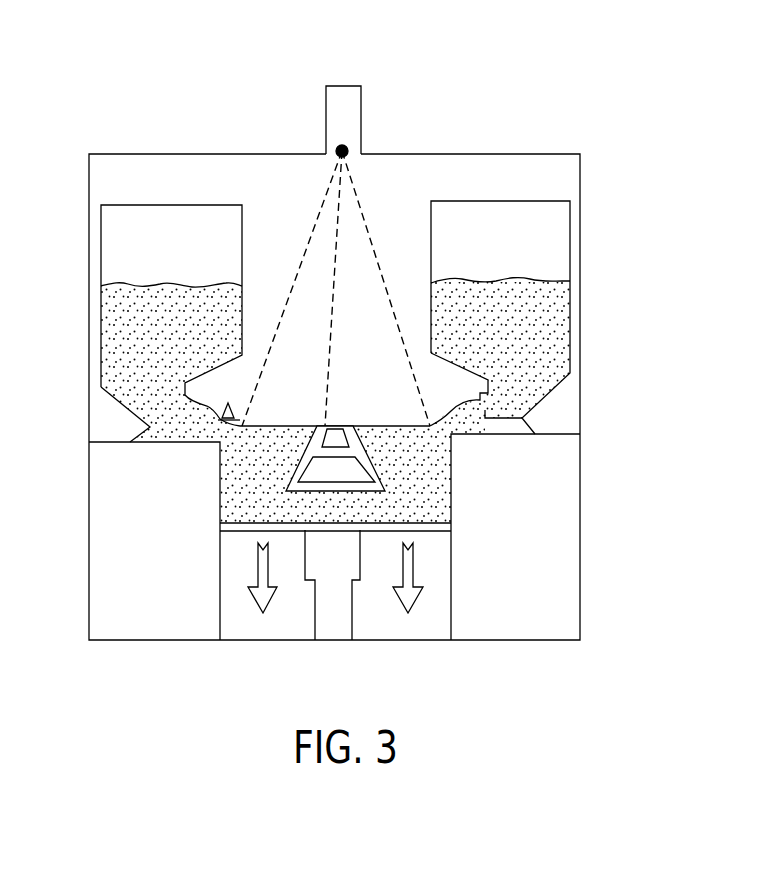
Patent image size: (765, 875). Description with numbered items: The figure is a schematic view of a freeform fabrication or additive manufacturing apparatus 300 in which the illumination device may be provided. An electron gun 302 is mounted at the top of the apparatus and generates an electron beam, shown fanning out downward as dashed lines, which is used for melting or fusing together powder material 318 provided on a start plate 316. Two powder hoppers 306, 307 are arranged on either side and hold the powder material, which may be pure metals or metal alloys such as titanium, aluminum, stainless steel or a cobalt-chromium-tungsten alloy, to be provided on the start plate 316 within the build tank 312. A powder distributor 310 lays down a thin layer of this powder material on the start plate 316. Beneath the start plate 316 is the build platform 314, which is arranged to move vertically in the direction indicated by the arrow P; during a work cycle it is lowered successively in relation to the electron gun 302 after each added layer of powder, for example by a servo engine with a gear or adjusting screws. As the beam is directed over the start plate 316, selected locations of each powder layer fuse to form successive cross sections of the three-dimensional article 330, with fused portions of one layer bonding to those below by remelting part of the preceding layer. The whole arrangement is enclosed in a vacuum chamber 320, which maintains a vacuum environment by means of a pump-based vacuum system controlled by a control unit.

The additive manufacturing apparatus 300 is at (516, 91).
The electron gun 302 is at (346, 148).
The powder hopper 306 is at (110, 330).
The powder hopper 307 is at (562, 322).
The powder distributor 310 is at (236, 411).
The build tank 312 is at (220, 600).
The build platform 314 is at (367, 532).
The start plate 316 is at (347, 492).
The powder material 318 is at (440, 472).
The vacuum chamber 320 is at (581, 601).
The three-dimensional article 330 is at (308, 458).